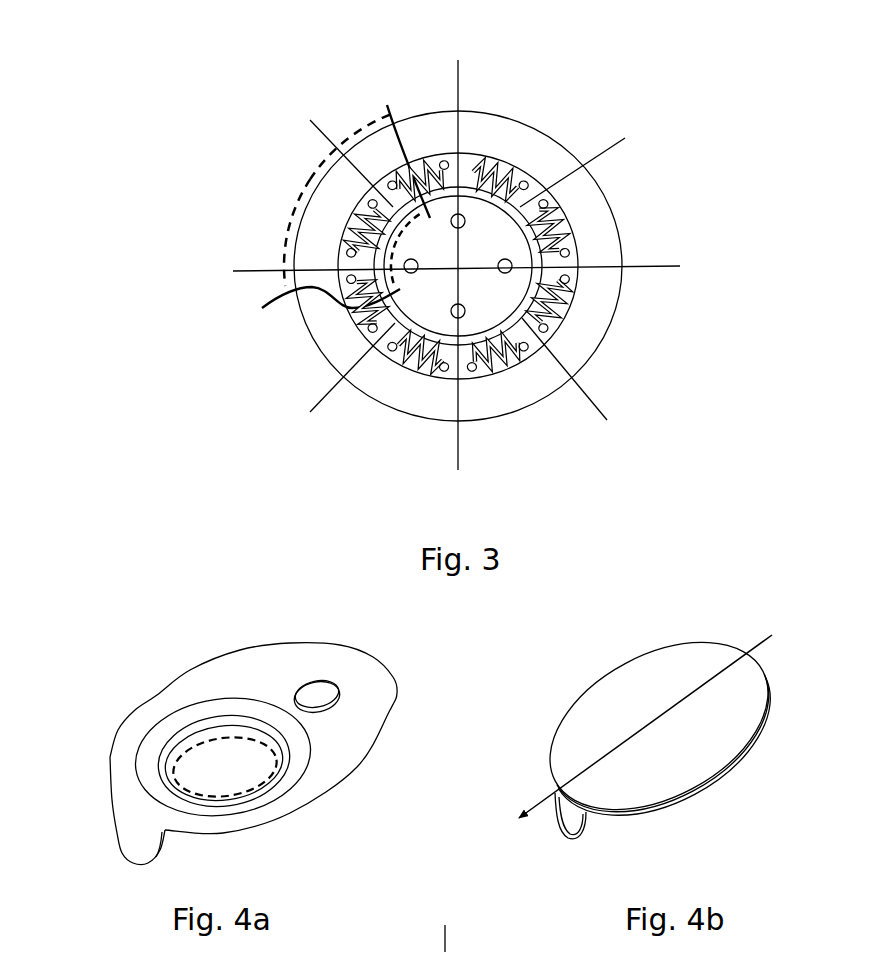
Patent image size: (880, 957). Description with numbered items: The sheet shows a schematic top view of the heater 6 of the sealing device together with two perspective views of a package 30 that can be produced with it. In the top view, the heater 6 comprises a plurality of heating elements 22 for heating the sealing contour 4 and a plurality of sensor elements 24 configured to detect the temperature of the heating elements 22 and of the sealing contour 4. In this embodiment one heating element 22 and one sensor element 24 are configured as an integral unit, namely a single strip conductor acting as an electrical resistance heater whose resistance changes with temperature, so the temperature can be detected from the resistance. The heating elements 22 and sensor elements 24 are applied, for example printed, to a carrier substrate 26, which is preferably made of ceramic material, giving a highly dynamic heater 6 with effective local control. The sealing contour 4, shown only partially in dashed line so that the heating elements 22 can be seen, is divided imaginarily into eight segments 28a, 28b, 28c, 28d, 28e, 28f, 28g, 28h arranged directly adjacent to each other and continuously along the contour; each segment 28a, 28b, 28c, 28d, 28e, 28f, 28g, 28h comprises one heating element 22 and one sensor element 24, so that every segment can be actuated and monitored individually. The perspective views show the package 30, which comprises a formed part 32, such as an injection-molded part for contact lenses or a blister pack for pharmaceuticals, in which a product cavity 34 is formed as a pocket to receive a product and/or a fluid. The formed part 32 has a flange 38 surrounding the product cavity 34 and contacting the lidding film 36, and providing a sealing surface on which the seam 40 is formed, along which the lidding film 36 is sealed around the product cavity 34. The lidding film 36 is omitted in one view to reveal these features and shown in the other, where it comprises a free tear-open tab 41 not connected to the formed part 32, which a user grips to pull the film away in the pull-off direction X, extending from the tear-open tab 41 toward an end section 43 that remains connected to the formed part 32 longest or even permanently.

In FIG. 3, the sealing contour 4 is at (315, 175).
In FIG. 3, the heater 6 is at (634, 312).
In FIG. 3, the heating element 22 is at (513, 180).
In FIG. 3, the sensor element 24 is at (557, 228).
In FIG. 3, the carrier substrate 26 is at (463, 187).
In FIG. 3, the segment 28a is at (536, 120).
In FIG. 3, the segment 28b is at (642, 211).
In FIG. 3, the segment 28c is at (624, 361).
In FIG. 3, the segment 28d is at (541, 463).
In FIG. 3, the segment 28e is at (379, 456).
In FIG. 3, the segment 28f is at (299, 379).
In FIG. 3, the segment 28g is at (267, 219).
In FIG. 3, the segment 28h is at (357, 116).
In FIG. 4B, the package 30 is at (733, 795).
In FIG. 4A, the formed part 32 is at (99, 698).
In FIG. 4B, the formed part 32 is at (637, 810).
In FIG. 4A, the product cavity 34 is at (208, 757).
In FIG. 4B, the lidding film 36 is at (680, 668).
In FIG. 4A, the flange 38 is at (355, 750).
In FIG. 4A, the seam 40 is at (160, 793).
In FIG. 4B, the tear-open tab 41 is at (745, 643).
In FIG. 4B, the end section 43 is at (573, 798).